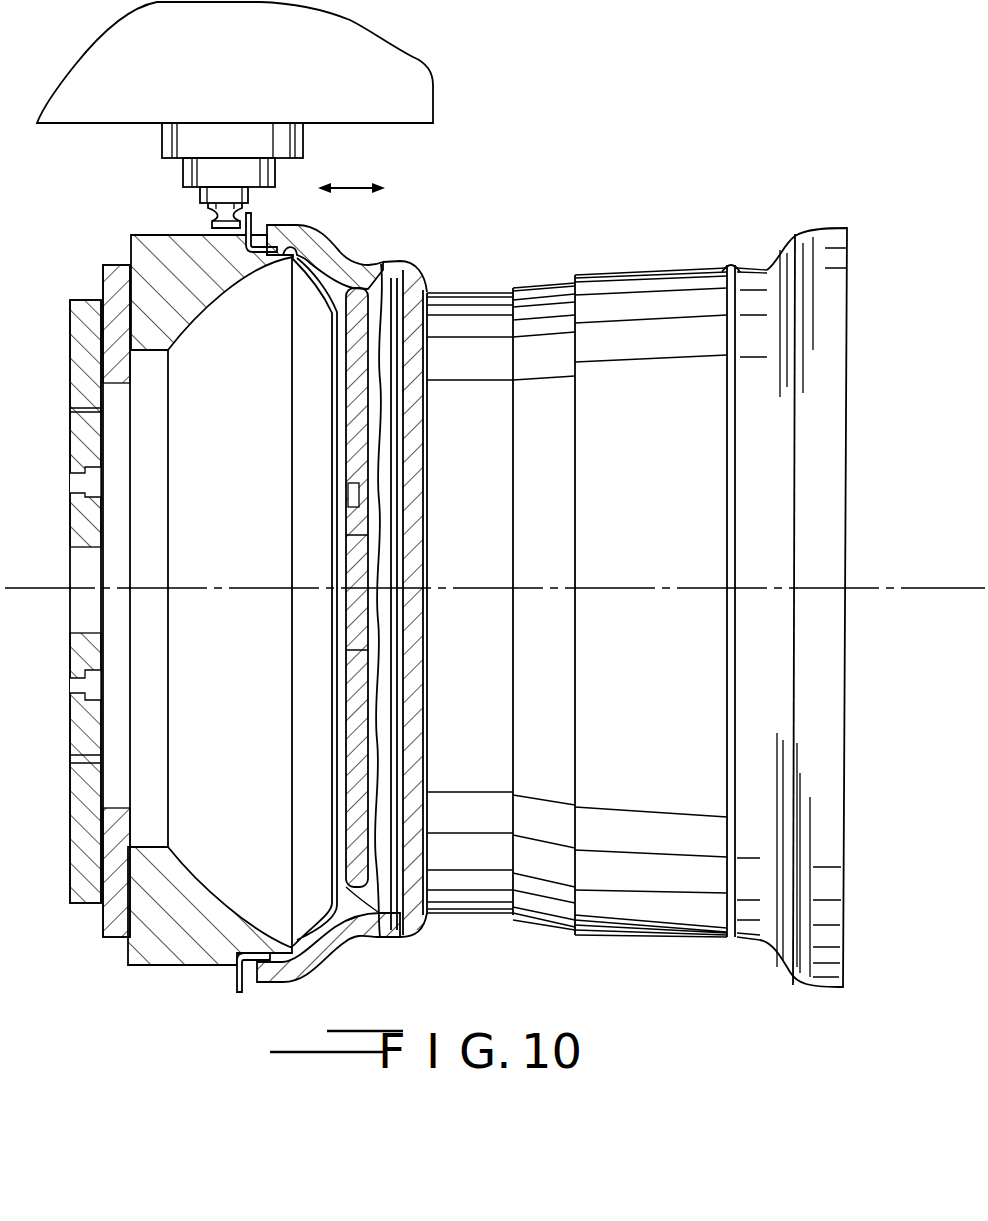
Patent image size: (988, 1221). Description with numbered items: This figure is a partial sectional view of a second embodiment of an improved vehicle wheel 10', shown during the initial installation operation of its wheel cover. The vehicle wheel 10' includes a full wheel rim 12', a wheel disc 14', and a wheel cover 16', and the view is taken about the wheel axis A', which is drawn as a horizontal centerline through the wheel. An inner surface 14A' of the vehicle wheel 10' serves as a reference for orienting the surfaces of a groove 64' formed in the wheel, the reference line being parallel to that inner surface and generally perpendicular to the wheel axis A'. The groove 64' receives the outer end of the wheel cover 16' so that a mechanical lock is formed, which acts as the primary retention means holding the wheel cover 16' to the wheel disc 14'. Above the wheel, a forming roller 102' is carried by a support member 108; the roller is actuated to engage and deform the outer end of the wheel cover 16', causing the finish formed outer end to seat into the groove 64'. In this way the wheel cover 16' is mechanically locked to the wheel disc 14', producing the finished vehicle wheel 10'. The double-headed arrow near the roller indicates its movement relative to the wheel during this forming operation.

The support member 108 is at (428, 69).
The forming roller 102' is at (190, 175).
The vehicle wheel 10' is at (410, 546).
The wheel rim 12' is at (374, 247).
The wheel disc 14' is at (608, 607).
The inner surface 14A' is at (428, 600).
The wheel cover 16' is at (273, 602).
The groove 64' is at (324, 946).
The wheel axis A' is at (495, 555).